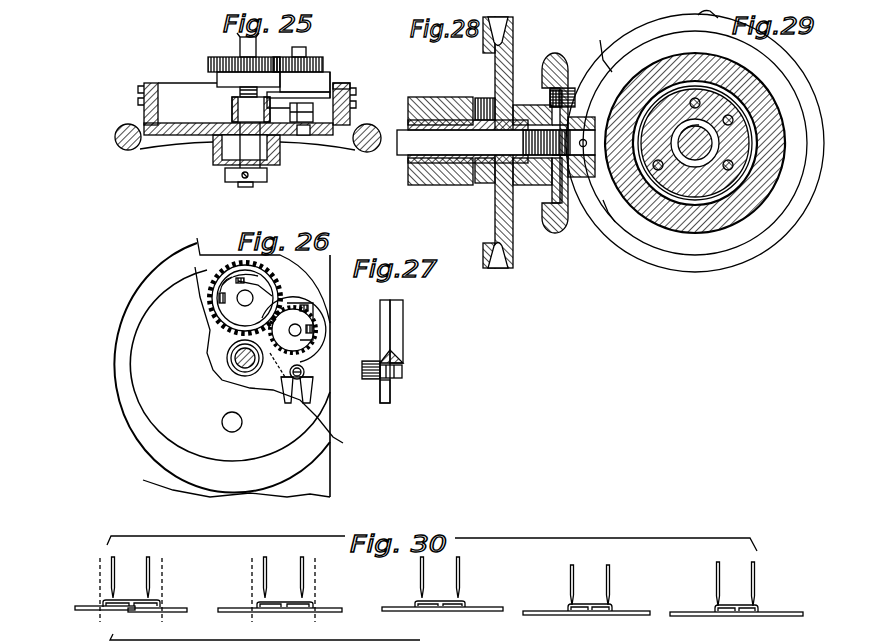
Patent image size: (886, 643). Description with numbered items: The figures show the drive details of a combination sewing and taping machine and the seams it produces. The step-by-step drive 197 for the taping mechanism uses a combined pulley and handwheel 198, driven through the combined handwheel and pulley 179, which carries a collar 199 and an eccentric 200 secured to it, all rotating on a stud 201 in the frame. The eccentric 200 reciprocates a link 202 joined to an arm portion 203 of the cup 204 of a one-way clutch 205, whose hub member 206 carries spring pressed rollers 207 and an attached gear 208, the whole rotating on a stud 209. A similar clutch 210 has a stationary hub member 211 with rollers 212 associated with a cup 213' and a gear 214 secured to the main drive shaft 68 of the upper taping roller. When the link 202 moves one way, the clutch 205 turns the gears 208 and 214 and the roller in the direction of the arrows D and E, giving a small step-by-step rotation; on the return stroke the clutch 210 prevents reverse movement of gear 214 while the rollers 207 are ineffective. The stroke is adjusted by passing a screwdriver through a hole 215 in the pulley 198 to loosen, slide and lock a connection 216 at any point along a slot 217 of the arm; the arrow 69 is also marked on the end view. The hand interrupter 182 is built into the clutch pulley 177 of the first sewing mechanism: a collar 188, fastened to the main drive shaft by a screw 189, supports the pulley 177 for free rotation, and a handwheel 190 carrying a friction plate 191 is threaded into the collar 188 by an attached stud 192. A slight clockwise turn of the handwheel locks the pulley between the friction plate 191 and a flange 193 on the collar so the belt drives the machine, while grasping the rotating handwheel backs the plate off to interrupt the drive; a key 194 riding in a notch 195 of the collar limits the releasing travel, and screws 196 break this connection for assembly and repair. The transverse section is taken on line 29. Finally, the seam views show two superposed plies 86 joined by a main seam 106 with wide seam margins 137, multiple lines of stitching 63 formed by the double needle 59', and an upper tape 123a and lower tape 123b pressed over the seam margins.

In FIG. 25, the main drive shaft 68 is at (240, 46).
In FIG. 26, the main drive shaft 68 is at (240, 304).
In FIG. 28, the driver pulley 177 is at (514, 28).
In FIG. 25, the combined handwheel and pulley 179 is at (352, 87).
In FIG. 28, the hand interrupter 182 is at (528, 257).
In FIG. 28, the collar 188 is at (435, 107).
In FIG. 29, the collar 188 is at (698, 165).
In FIG. 28, the screw 189 is at (487, 100).
In FIG. 28, the handwheel 190 is at (565, 63).
In FIG. 28, the friction plate 191 is at (550, 97).
In FIG. 29, the friction plate 191 is at (732, 127).
In FIG. 28, the stud 192 is at (577, 150).
In FIG. 28, the flange 193 is at (482, 190).
In FIG. 29, the key 194 is at (722, 105).
In FIG. 28, the notch 195 is at (590, 137).
In FIG. 28, the screws 196 is at (568, 98).
In FIG. 25, the drive 197 is at (178, 158).
In FIG. 25, the combined pulley and handwheel 198 is at (144, 112).
In FIG. 26, the combined pulley and handwheel 198 is at (343, 443).
In FIG. 25, the collar 199 is at (267, 173).
In FIG. 25, the eccentric 200 is at (243, 108).
In FIG. 26, the eccentric 200 is at (243, 377).
In FIG. 25, the stud 201 is at (252, 187).
In FIG. 26, the stud 201 is at (240, 362).
In FIG. 25, the link 202 is at (333, 113).
In FIG. 26, the link 202 is at (292, 380).
In FIG. 26, the arm portion 203 is at (312, 392).
In FIG. 25, the cup 204 is at (331, 85).
In FIG. 26, the cup 204 is at (302, 302).
In FIG. 25, the one way clutch 205 is at (331, 78).
In FIG. 26, the one way clutch 205 is at (329, 314).
In FIG. 27, the hub member 206 is at (403, 310).
In FIG. 26, the spring pressed rollers 207 is at (318, 320).
In FIG. 25, the gear 208 is at (312, 57).
In FIG. 26, the gear 208 is at (312, 360).
In FIG. 25, the stud 209 is at (294, 53).
In FIG. 25, the clutch 210 is at (215, 78).
In FIG. 26, the clutch 210 is at (213, 262).
In FIG. 26, the stationary hub member 211 is at (215, 280).
In FIG. 26, the rollers 212 is at (228, 298).
In FIG. 26, the cup 213' is at (179, 295).
In FIG. 25, the gear 214 is at (214, 62).
In FIG. 26, the gear 214 is at (212, 316).
In FIG. 25, the hole 215 is at (306, 137).
In FIG. 26, the hole 215 is at (238, 431).
In FIG. 27, the connection 216 is at (403, 372).
In FIG. 26, the slot 217 is at (305, 400).
In FIG. 27, the slot 217 is at (390, 395).
In FIG. 28, the section line 29 is at (557, 53).
In FIG. 26, the direction arrow 69 is at (121, 428).
In FIG. 26, the arrow D is at (270, 258).
In FIG. 26, the arrow E is at (296, 296).
In FIG. 30, the lines of stitching 63 is at (148, 615).
In FIG. 30, the superposed plies 86 is at (88, 606).
In FIG. 30, the main seam 106 is at (283, 614).
In FIG. 30, the seam margins 137 is at (415, 604).
In FIG. 30, the double needle 59' is at (737, 583).
In FIG. 30, the upper tape 123a is at (760, 610).
In FIG. 30, the lower tape 123b is at (757, 618).